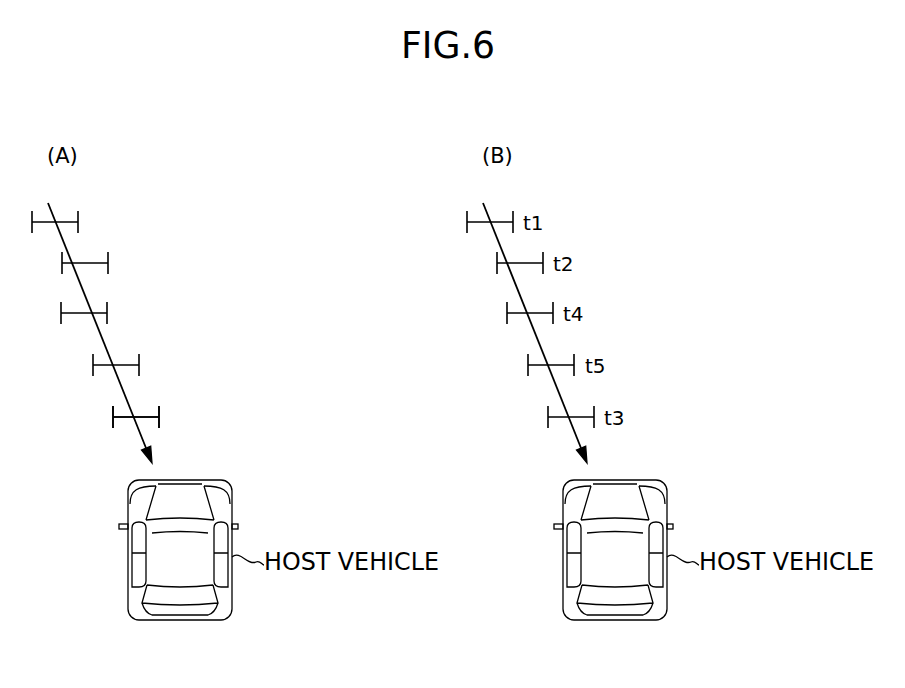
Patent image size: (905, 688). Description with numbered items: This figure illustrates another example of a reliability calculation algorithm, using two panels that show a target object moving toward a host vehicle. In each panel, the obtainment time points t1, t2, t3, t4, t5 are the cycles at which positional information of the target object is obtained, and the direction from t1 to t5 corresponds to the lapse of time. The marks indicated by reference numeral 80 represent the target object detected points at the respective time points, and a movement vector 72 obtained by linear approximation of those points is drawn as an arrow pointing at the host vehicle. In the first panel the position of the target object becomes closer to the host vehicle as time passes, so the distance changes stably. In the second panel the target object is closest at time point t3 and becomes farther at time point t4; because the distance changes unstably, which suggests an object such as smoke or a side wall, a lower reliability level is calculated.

The movement vector 72 is at (120, 387).
The target object detected points 80 is at (123, 420).
The obtainment time point t1 is at (70, 223).
The obtainment time point t2 is at (100, 264).
The obtainment time point t3 is at (100, 314).
The obtainment time point t4 is at (132, 366).
The obtainment time point t5 is at (152, 418).